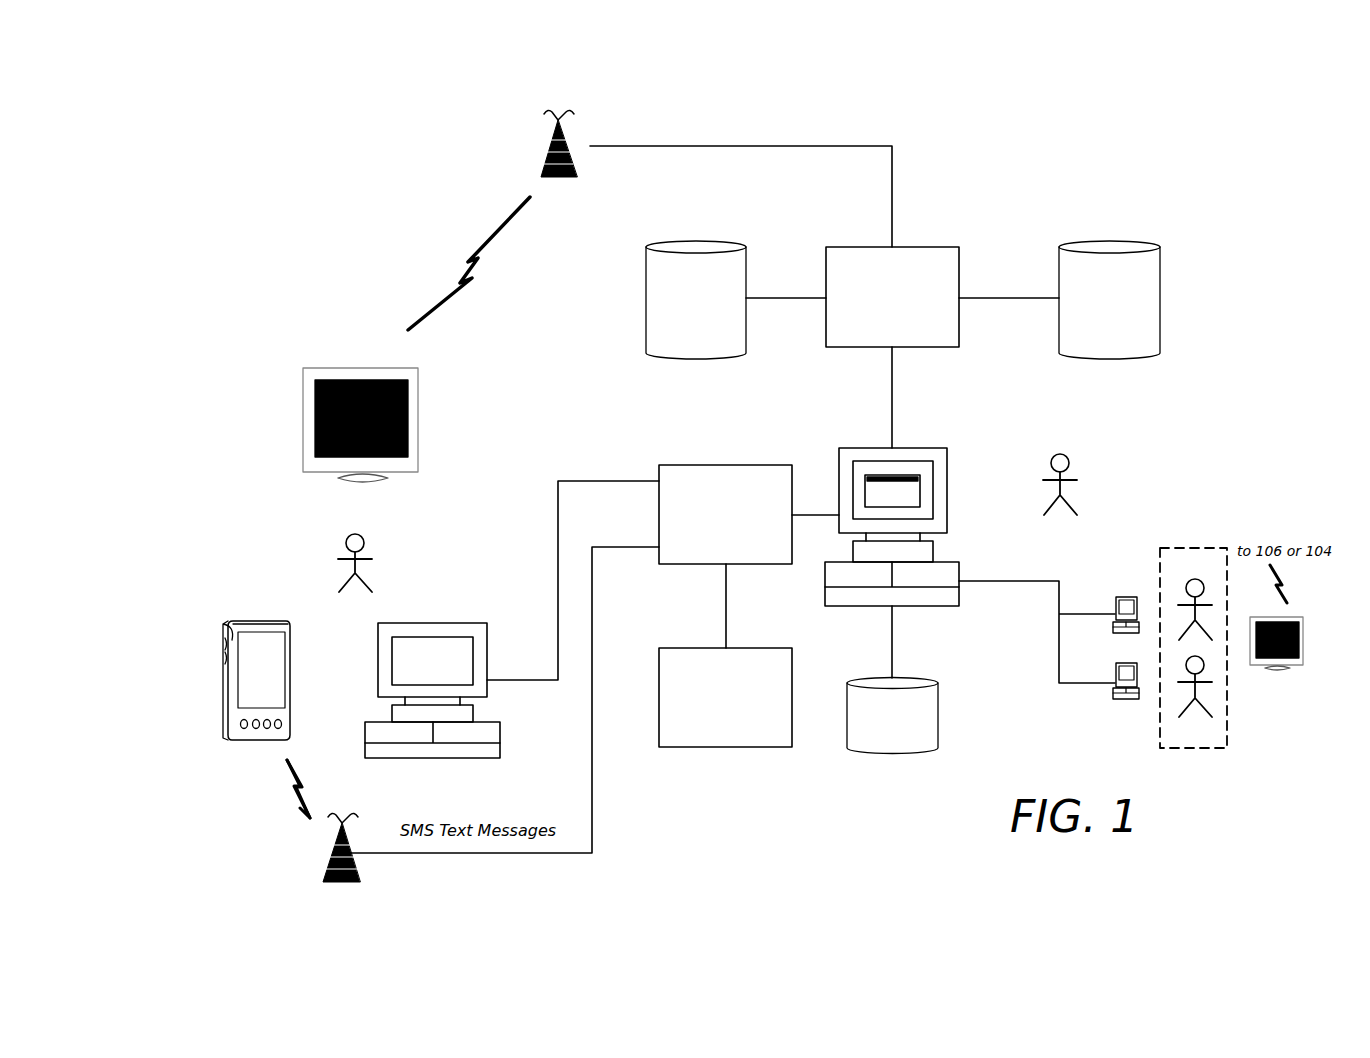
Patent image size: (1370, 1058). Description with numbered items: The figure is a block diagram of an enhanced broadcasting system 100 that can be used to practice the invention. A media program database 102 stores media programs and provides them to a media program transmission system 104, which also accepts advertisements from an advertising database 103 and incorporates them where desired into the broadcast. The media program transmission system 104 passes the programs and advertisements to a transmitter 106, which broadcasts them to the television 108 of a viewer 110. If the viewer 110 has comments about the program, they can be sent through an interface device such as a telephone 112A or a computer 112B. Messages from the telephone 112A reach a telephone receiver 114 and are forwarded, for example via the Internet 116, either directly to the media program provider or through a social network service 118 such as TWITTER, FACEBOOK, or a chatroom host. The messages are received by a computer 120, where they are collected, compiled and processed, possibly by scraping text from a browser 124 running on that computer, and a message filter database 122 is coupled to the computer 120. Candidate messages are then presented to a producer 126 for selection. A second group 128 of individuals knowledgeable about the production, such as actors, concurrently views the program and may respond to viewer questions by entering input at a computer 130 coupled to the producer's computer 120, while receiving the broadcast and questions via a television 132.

The enhanced broadcasting system (EBS) 100 is at (1122, 152).
The media program database 102 is at (1160, 275).
The advertising database 103 is at (646, 298).
The media program transmission system (MPTS) 104 is at (913, 247).
The transmitter 106 is at (575, 131).
The television 108 is at (420, 404).
The viewer 110 is at (328, 558).
The telephone 112A is at (211, 630).
The computer 112B is at (418, 623).
The telephone receiver 114 is at (367, 858).
The Internet 116 is at (700, 465).
The social network service (SNS) 118 is at (760, 747).
The computer 120 is at (935, 493).
The message filter database 122 is at (938, 706).
The browser 124 is at (902, 475).
The producer 126 is at (1090, 497).
The second group 128 is at (1203, 548).
The computer 130 is at (1127, 700).
The television 132 is at (1270, 668).